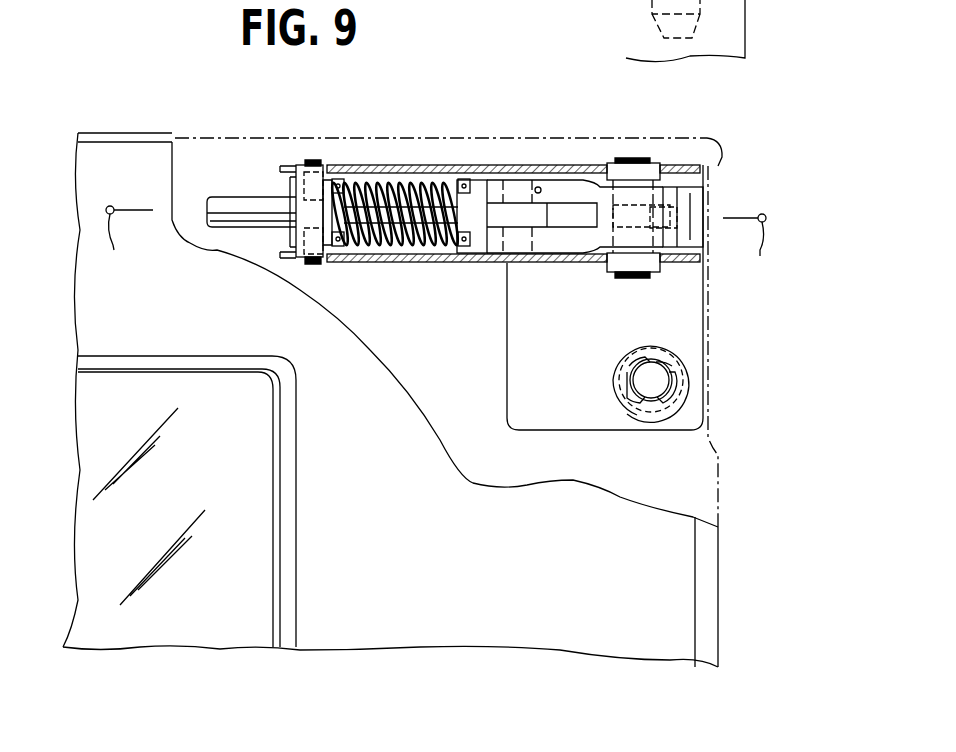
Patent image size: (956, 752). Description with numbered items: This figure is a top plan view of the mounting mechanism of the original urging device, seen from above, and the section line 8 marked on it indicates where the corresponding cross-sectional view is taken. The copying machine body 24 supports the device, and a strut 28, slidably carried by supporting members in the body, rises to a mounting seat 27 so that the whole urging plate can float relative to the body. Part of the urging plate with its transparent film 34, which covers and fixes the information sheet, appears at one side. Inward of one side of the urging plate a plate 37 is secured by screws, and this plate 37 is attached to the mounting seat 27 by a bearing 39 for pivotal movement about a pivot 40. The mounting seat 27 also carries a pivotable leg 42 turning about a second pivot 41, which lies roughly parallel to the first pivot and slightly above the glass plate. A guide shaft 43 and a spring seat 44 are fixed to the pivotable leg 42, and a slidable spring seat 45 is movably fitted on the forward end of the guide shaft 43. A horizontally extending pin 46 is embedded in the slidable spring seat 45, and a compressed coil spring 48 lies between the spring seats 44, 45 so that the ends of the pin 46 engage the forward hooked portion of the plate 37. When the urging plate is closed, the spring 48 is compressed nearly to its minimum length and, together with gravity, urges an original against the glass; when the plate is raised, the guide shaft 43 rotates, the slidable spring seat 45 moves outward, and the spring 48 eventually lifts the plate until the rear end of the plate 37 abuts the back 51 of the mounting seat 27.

The section line 8— 8 is at (439, 245).
The copying machine body 24 is at (690, 580).
The mounting seat 27 is at (697, 310).
The strut 28 is at (651, 368).
The transparent film 34 is at (178, 630).
The plate 37 is at (586, 168).
The bearing 39 is at (606, 165).
The pivot 40 is at (640, 160).
The pivot 41 is at (520, 186).
The pivotable leg 42 is at (477, 180).
The guide shaft 43 is at (234, 205).
The spring seat 44 is at (462, 178).
The slidable spring seat 45 is at (338, 178).
The pin 46 is at (313, 159).
The coil spring 48 is at (402, 190).
The back of mounting seat 51 is at (690, 197).